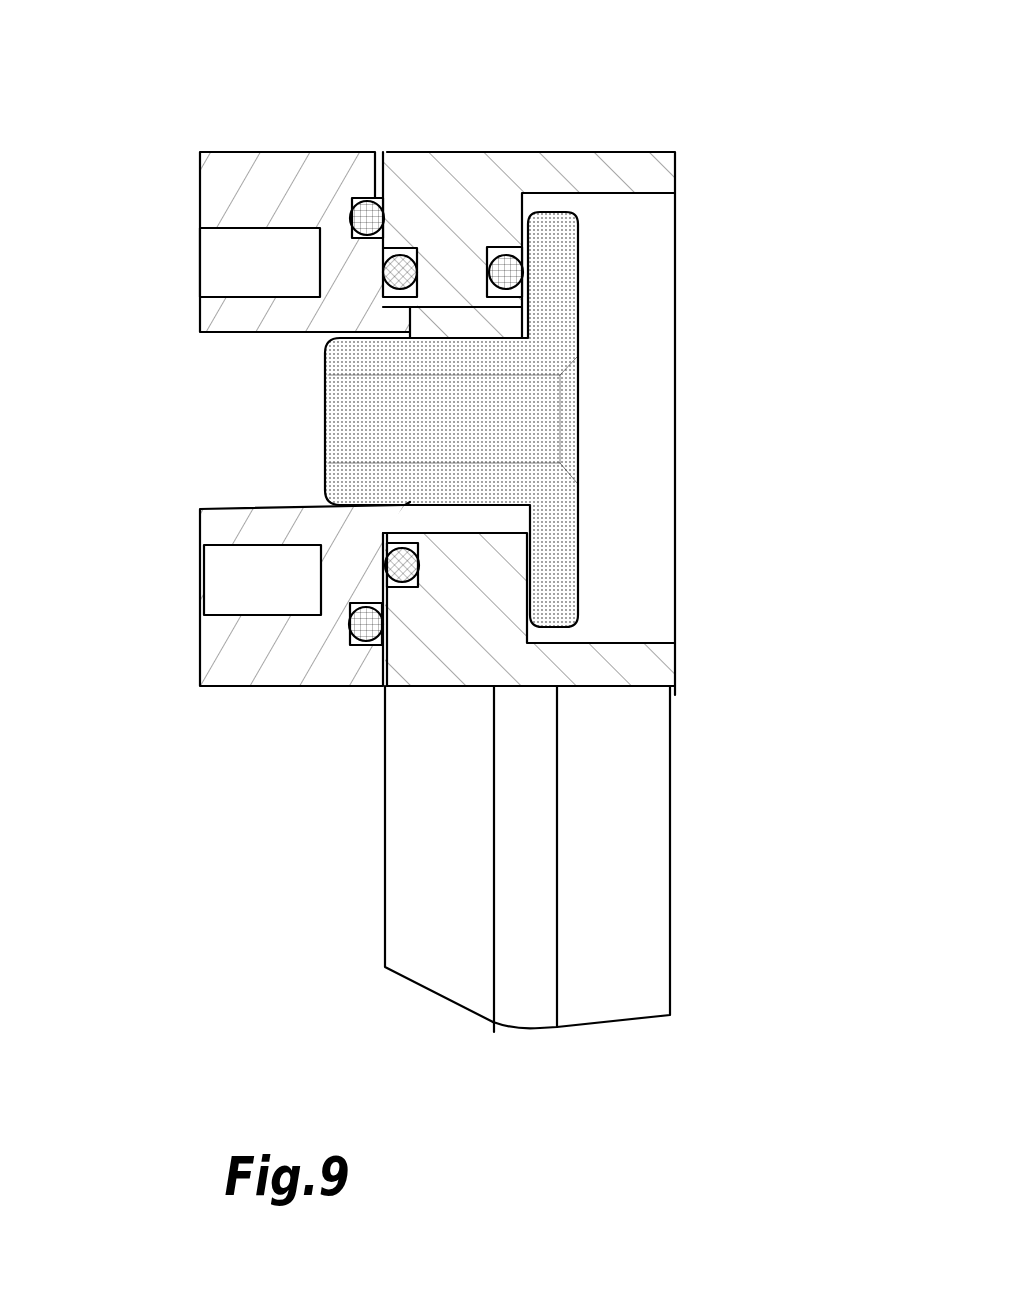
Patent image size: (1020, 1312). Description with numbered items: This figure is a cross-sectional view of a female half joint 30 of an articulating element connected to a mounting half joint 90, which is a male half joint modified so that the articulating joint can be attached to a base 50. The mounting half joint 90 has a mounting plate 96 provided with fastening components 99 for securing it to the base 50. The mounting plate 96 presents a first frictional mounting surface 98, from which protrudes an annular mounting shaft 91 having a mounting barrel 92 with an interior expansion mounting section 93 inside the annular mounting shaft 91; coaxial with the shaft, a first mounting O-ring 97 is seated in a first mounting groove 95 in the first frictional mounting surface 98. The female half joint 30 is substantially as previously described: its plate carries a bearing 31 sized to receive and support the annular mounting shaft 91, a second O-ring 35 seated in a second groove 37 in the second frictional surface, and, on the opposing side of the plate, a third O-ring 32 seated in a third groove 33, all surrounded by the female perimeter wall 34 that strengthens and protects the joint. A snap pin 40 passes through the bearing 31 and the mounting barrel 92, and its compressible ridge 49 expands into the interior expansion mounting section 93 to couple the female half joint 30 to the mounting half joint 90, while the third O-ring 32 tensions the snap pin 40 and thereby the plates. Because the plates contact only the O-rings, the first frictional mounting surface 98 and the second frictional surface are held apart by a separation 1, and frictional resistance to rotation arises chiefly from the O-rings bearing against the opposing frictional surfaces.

The mounting half joint 90 is at (160, 115).
The female half joint 30 is at (750, 484).
The mounting plate 96 is at (202, 187).
The fastening components 99 is at (223, 240).
The female perimeter wall 34 is at (633, 177).
The O-ring 97 is at (355, 197).
The gap 95 is at (374, 198).
The second O-ring 35 is at (400, 270).
The bearing 31 is at (467, 307).
The third groove 33 is at (492, 248).
The third O-ring 32 is at (514, 265).
The interior expansion mounting section 93 is at (412, 330).
The snap pin 40 is at (560, 352).
The compressible ridge 49 is at (410, 502).
The annular mounting shaft 91 is at (306, 508).
The mounting barrel 92 is at (252, 447).
The second groove 37 is at (412, 587).
The first frictional mounting surface 98 is at (386, 650).
The separation 1 is at (383, 678).
The shaft 50 is at (662, 848).